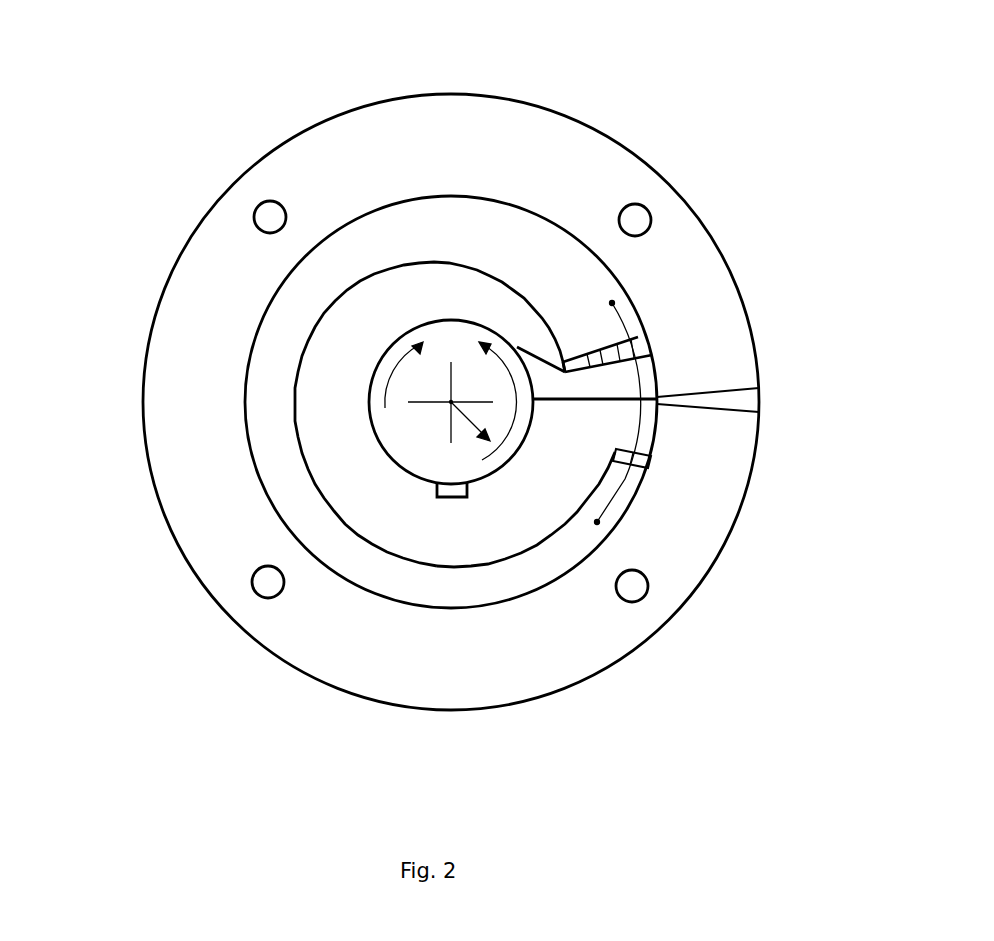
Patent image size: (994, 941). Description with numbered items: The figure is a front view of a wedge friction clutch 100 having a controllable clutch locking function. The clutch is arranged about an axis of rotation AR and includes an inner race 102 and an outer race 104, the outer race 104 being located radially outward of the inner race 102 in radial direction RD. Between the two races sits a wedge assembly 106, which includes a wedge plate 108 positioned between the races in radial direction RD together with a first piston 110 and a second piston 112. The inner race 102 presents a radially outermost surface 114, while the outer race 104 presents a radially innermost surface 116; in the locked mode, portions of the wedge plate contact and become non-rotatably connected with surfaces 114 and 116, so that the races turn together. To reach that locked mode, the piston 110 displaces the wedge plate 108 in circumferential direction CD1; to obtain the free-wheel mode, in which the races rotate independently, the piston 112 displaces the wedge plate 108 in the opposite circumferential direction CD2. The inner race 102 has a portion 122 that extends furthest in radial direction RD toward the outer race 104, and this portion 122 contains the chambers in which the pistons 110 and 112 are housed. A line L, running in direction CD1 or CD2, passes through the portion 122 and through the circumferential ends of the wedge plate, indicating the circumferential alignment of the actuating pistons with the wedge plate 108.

The wedge friction clutch 100 is at (689, 60).
The inner race 102 is at (320, 437).
The outer race 104 is at (197, 267).
The wedge assembly 106 is at (663, 342).
The wedge plate 108 is at (290, 497).
The piston 110 is at (586, 362).
The piston 112 is at (637, 483).
The radially outermost surface 114 is at (461, 562).
The radially innermost surface 116 is at (419, 198).
The portion 122 is at (657, 441).
The line L is at (623, 520).
The circumferential direction CD1 is at (531, 431).
The circumferential direction CD2 is at (372, 403).
The radial direction RD is at (473, 433).
The axis of rotation AR is at (449, 405).